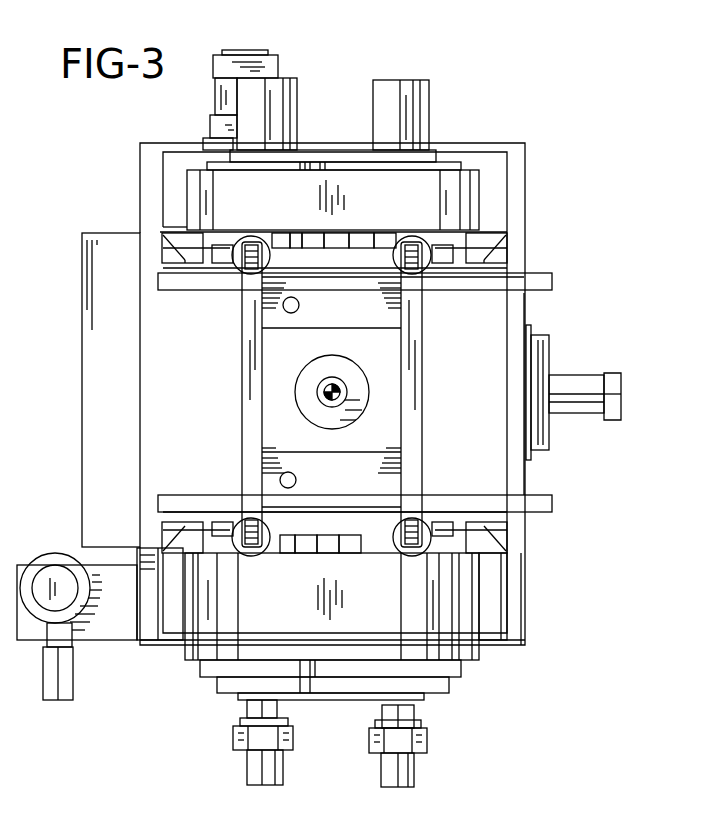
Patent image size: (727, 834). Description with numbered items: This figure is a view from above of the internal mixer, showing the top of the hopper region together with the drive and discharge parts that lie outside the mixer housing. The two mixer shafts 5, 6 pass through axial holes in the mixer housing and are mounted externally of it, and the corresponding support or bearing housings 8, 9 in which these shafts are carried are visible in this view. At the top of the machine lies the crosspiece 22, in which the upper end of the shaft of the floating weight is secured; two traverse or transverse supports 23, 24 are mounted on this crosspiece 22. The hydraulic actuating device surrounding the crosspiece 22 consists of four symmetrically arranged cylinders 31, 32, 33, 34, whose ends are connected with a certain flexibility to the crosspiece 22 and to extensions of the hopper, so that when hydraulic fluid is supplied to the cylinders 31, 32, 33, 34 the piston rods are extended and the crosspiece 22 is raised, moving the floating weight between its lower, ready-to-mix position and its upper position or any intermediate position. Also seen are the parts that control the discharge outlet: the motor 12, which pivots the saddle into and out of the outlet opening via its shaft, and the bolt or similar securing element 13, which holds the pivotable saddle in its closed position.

The mixer shaft 5 is at (282, 95).
The mixer shaft 6 is at (397, 82).
The support or bearing housing 8 is at (248, 648).
The support or bearing housing 9 is at (197, 178).
The motor 12 is at (221, 60).
The bolt or securing element 13 is at (585, 410).
The crosspiece 22 is at (400, 400).
The transverse support 23 is at (248, 358).
The transverse support 24 is at (420, 355).
The cylinder 31 is at (430, 527).
The cylinder 32 is at (398, 246).
The cylinder 33 is at (240, 525).
The cylinder 34 is at (268, 246).